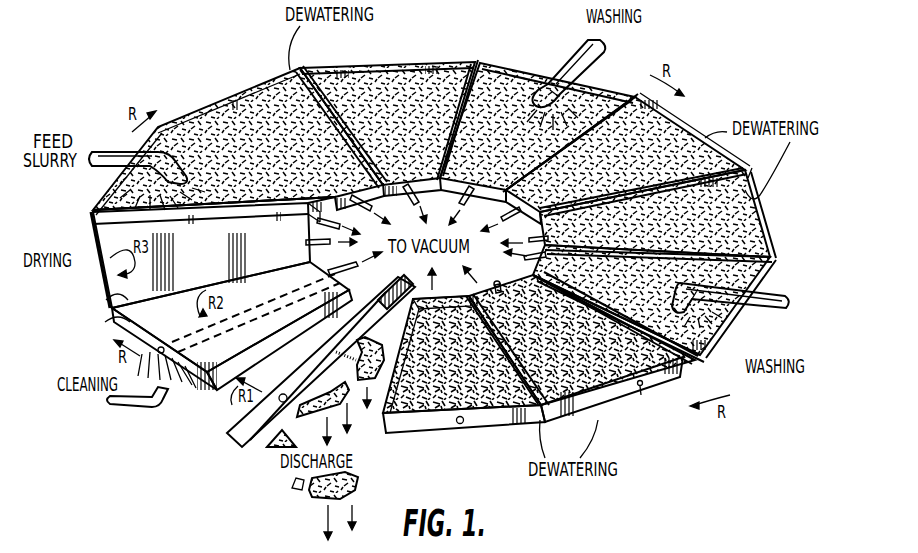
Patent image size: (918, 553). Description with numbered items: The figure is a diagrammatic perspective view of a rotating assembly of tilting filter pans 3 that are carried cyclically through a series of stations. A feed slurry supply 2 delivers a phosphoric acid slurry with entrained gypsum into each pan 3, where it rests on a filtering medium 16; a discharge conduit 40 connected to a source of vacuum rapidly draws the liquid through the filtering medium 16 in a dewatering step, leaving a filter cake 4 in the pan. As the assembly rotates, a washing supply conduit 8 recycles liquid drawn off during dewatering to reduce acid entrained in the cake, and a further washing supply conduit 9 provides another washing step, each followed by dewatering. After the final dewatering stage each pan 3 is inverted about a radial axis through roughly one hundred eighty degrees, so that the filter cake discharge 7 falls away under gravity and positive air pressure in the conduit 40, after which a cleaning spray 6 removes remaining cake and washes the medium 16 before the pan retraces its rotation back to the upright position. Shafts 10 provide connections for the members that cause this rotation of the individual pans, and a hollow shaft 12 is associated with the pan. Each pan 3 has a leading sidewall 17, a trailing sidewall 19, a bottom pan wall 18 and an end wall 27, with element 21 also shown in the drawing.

The feed slurry supply 2 is at (102, 146).
The tilting filter pan 3 is at (203, 88).
The filter cake 4 is at (364, 112).
The cleaning spray 6 is at (155, 420).
The filter cake discharge 7 is at (353, 436).
The washing supply conduit 8 is at (560, 60).
The washing supply conduit 9 is at (797, 305).
The shaft 10 is at (617, 390).
The hollow shaft 12 is at (466, 418).
The filtering medium 16 is at (105, 248).
The leading sidewall 17 is at (92, 210).
The bottom pan wall 18 is at (101, 334).
The trailing sidewall 19 is at (106, 299).
The filter pan 21 is at (466, 363).
The right end wall 27 is at (643, 386).
The discharge conduit 40 is at (358, 204).